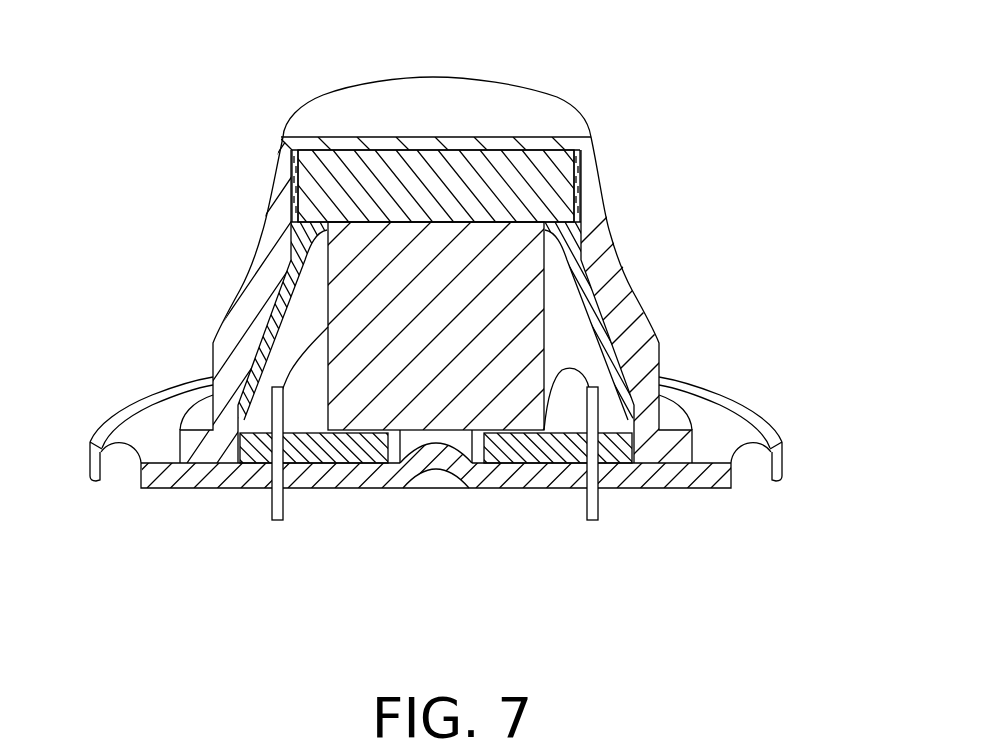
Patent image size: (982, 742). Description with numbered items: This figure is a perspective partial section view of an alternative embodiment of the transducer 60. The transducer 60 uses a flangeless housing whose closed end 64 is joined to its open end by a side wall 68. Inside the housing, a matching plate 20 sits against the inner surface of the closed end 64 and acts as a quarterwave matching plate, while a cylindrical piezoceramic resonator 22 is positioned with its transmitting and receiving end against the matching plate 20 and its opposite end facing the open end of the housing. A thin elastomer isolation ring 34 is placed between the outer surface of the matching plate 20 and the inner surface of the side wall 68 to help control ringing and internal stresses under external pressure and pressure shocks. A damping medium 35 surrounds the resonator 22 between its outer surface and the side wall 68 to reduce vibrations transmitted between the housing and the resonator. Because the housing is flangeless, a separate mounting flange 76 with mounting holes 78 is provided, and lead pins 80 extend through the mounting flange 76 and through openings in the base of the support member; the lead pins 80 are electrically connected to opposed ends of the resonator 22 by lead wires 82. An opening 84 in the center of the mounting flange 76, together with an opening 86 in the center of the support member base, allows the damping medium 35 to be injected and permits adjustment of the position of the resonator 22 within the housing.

The matching plate 20 is at (549, 158).
The resonator 22 is at (330, 252).
The isolation ring 34 is at (590, 173).
The damping medium 35 is at (288, 316).
The transducer 60 is at (663, 245).
The closed end 64 is at (355, 152).
The side wall 68 is at (645, 330).
The mounting flange 76 is at (763, 431).
The mounting holes 78 is at (122, 482).
The lead pins 80 is at (260, 505).
The lead wires 82 is at (240, 353).
The opening 84 is at (442, 458).
The opening 86 is at (383, 490).